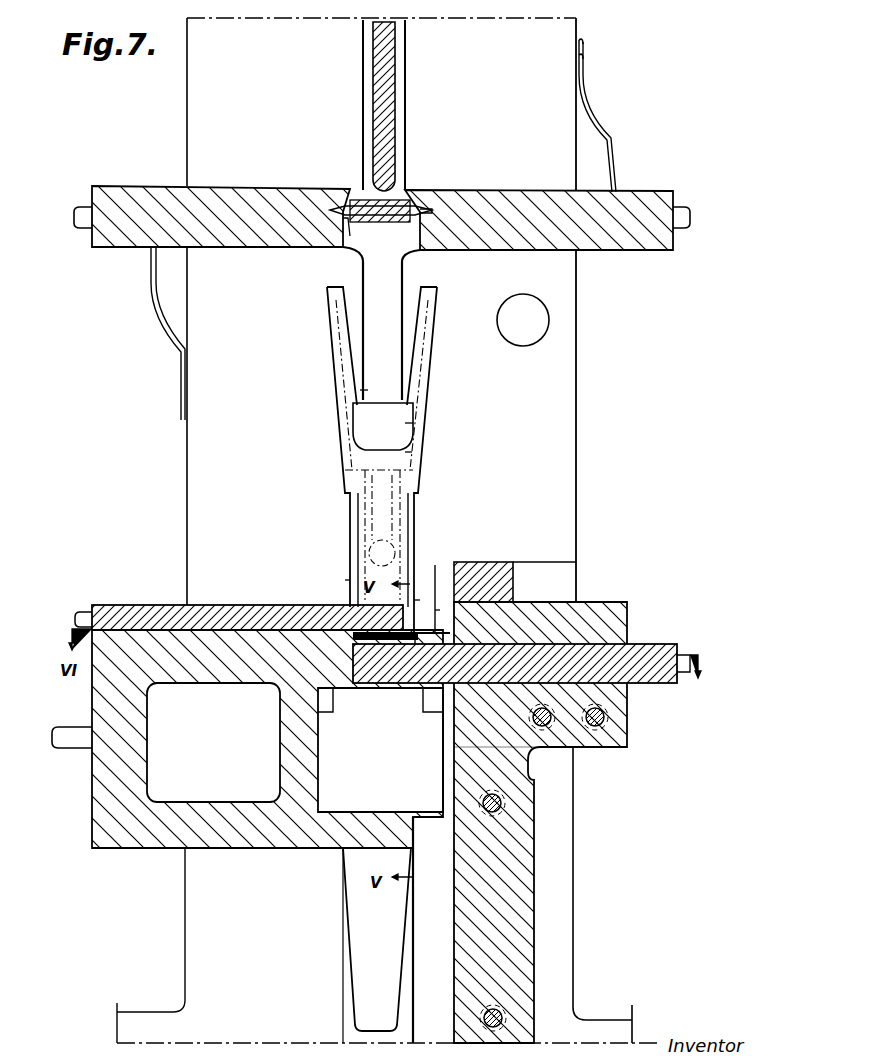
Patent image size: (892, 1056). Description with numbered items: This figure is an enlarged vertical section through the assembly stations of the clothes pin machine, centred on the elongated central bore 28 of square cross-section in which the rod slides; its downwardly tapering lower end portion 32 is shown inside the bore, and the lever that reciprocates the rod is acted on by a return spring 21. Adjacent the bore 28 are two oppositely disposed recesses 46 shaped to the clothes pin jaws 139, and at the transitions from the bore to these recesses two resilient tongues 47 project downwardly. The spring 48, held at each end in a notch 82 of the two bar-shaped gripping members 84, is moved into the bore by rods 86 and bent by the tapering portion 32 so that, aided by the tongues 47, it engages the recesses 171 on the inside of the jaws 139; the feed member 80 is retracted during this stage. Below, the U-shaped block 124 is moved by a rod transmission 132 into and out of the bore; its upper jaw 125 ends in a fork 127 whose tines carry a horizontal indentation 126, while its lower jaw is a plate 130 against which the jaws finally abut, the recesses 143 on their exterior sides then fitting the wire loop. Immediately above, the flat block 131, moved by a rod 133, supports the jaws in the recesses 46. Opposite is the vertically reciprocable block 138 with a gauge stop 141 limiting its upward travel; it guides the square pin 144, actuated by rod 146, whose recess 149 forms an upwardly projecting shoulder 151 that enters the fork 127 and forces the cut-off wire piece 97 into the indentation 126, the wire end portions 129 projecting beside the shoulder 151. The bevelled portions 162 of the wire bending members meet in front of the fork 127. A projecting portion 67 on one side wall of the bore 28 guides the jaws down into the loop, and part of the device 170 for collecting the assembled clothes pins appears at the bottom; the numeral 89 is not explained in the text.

The return spring 21 is at (612, 133).
The central bore 28 is at (406, 83).
The lower end portion of rod 32 is at (392, 118).
The recesses 46 is at (432, 332).
The resilient tongues 47 is at (365, 389).
The spring 48 is at (350, 204).
The projecting portion 67 is at (434, 625).
The feed member 80 is at (398, 198).
The notch 82 is at (435, 205).
The gripping members 84 is at (246, 194).
The rods 86 is at (78, 214).
The recess 89 is at (338, 212).
The piece 97 is at (352, 645).
The block 124 is at (110, 832).
The upper jaw 125 is at (352, 640).
The indentation 126 is at (345, 648).
The fork 127 is at (347, 600).
The end portions of wire 129 is at (400, 650).
The plate 130 is at (340, 852).
The flat block 131 is at (108, 604).
The rod transmission 132 is at (70, 748).
The rod 133 is at (86, 614).
The block 138 is at (598, 604).
The pin jaws 139 is at (362, 388).
The gauge stop 141 is at (501, 577).
The recesses 143 is at (406, 453).
The pin 144 is at (648, 652).
The rod 146 is at (694, 680).
The recess 149 is at (440, 608).
The shoulder 151 is at (424, 625).
The bevelled portions 162 is at (408, 700).
The collecting device 170 is at (349, 962).
The recesses 171 is at (352, 447).